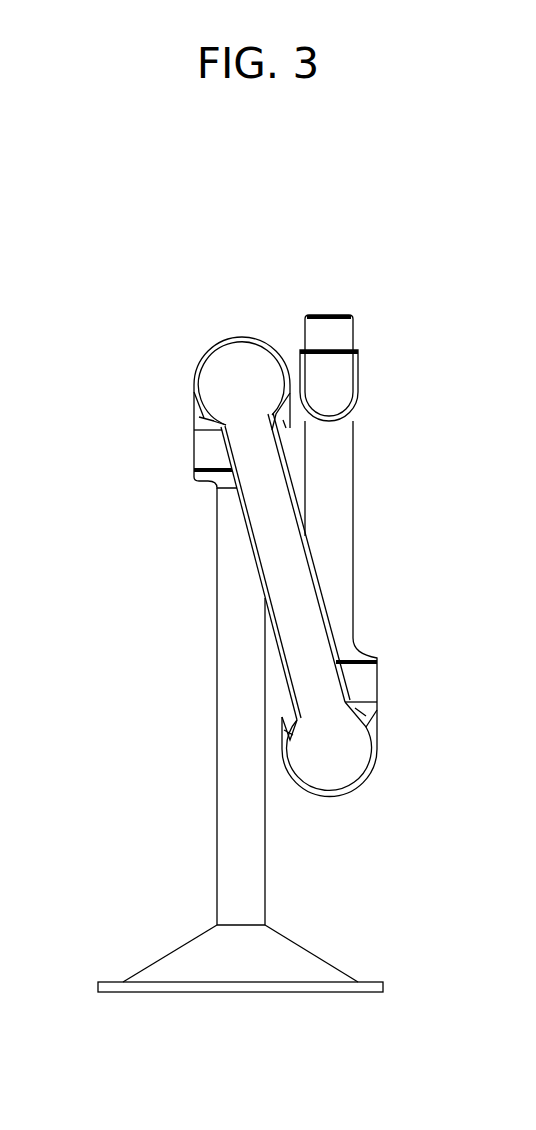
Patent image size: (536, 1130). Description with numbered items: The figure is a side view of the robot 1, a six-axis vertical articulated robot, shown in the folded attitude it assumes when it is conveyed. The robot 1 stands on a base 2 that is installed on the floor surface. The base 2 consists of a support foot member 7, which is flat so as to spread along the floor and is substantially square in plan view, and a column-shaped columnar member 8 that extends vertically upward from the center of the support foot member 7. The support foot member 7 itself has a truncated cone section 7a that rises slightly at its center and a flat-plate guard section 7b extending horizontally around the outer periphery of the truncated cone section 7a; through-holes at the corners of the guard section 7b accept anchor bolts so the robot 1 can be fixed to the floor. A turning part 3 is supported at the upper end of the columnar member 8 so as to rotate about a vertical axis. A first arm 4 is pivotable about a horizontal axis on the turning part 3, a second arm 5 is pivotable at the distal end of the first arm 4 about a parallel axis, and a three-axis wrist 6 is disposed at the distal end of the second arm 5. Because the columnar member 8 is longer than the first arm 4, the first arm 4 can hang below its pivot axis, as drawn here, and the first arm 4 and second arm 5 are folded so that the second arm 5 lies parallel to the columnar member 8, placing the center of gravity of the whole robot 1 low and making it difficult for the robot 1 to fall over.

The robot 1 is at (80, 254).
The base 2 is at (176, 888).
The turning part 3 is at (193, 444).
The first arm 4 is at (248, 552).
The second arm 5 is at (382, 703).
The wrist 6 is at (325, 312).
The support foot member 7 is at (140, 961).
The truncated cone section 7a is at (305, 945).
The guard section 7b is at (368, 978).
The columnar member 8 is at (217, 688).